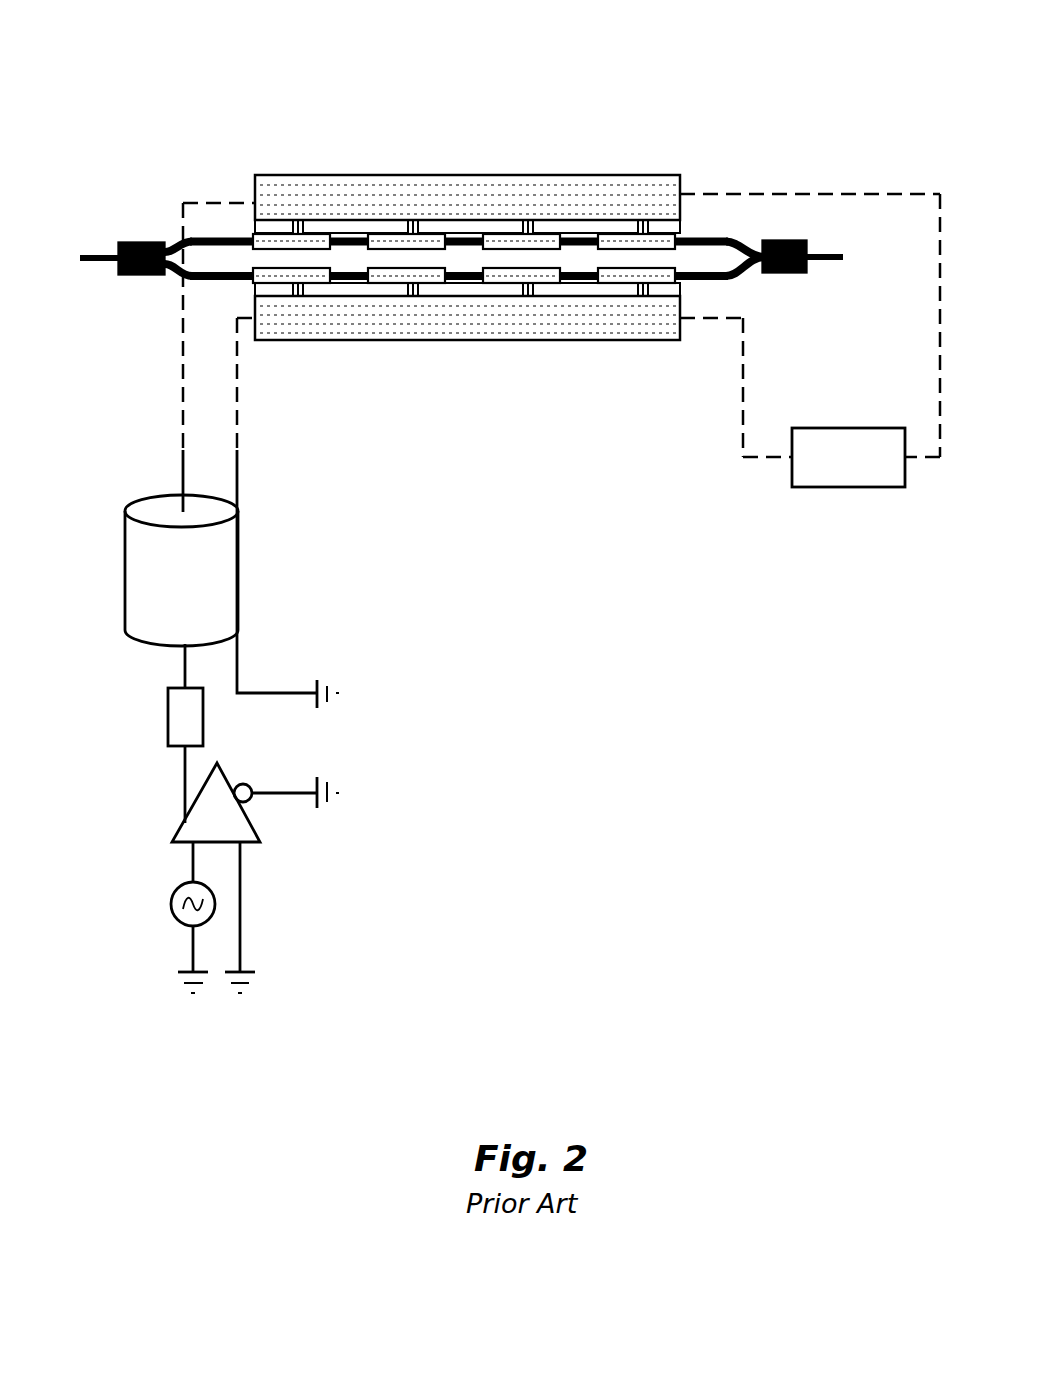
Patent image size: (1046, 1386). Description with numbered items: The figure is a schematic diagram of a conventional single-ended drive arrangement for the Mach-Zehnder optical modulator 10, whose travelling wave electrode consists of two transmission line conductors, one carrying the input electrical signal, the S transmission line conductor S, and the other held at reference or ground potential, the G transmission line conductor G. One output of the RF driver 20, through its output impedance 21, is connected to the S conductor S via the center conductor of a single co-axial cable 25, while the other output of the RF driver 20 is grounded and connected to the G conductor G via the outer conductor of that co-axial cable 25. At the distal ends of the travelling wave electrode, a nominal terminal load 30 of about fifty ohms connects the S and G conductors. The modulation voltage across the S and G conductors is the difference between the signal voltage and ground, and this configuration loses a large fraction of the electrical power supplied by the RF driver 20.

The optical modulator 10 is at (488, 150).
The S transmission line conductor S is at (182, 359).
The G transmission line conductor G is at (238, 418).
The nominal terminal load 30 is at (838, 474).
The co-axial cable 25 is at (132, 568).
The output impedance 21 is at (168, 718).
The RF driver 20 is at (202, 822).